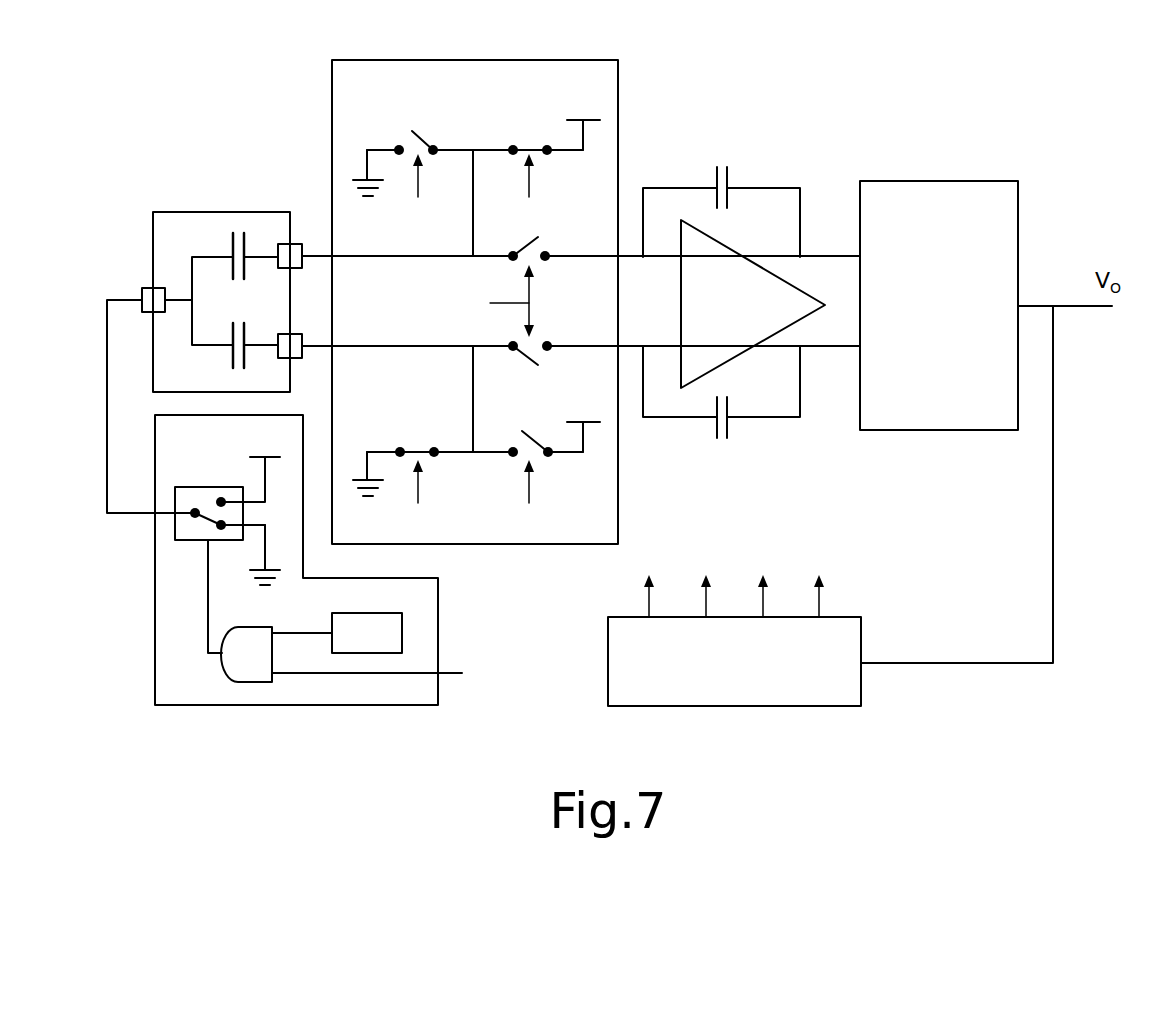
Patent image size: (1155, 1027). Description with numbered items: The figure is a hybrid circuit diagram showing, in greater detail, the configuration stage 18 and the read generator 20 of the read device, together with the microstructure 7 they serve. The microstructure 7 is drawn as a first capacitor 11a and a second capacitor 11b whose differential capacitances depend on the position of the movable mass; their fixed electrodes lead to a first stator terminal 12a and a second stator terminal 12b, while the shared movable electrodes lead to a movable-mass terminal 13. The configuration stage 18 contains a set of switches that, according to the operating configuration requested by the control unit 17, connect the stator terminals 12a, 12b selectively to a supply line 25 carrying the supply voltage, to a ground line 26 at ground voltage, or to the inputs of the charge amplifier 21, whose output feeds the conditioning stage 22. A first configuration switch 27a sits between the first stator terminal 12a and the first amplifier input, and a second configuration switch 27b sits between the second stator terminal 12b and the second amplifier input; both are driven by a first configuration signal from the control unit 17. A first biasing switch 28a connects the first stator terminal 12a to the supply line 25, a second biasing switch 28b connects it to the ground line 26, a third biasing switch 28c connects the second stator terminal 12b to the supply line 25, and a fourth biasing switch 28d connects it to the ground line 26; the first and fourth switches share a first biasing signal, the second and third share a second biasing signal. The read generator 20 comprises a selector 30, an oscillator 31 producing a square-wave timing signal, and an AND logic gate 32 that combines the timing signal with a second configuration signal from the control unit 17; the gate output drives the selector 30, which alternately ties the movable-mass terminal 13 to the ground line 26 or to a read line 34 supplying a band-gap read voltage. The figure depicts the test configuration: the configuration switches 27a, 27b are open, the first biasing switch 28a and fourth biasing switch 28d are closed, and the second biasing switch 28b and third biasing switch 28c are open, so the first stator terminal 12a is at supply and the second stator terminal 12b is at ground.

The microstructure 7 is at (218, 212).
The first capacitor 11a is at (233, 250).
The second capacitor 11b is at (233, 358).
The first stator terminal 12a is at (290, 244).
The second stator terminal 12b is at (296, 358).
The movable-mass terminal 13 is at (150, 288).
The control unit 17 is at (767, 707).
The configuration stage 18 is at (445, 60).
The read generator 20 is at (272, 706).
The charge amplifier 21 is at (736, 152).
The conditioning stage 22 is at (925, 181).
The supply line 25 is at (600, 121).
The ground line 26 is at (383, 186).
The first configuration switch 27a is at (532, 238).
The second configuration switch 27b is at (528, 360).
The first biasing switch 28a is at (528, 142).
The second biasing switch 28b is at (412, 131).
The third biasing switch 28c is at (532, 443).
The fourth biasing switch 28d is at (413, 445).
The selector 30 is at (200, 541).
The oscillator 31 is at (403, 630).
The AND logic gate 32 is at (225, 663).
The read line 34 is at (255, 457).